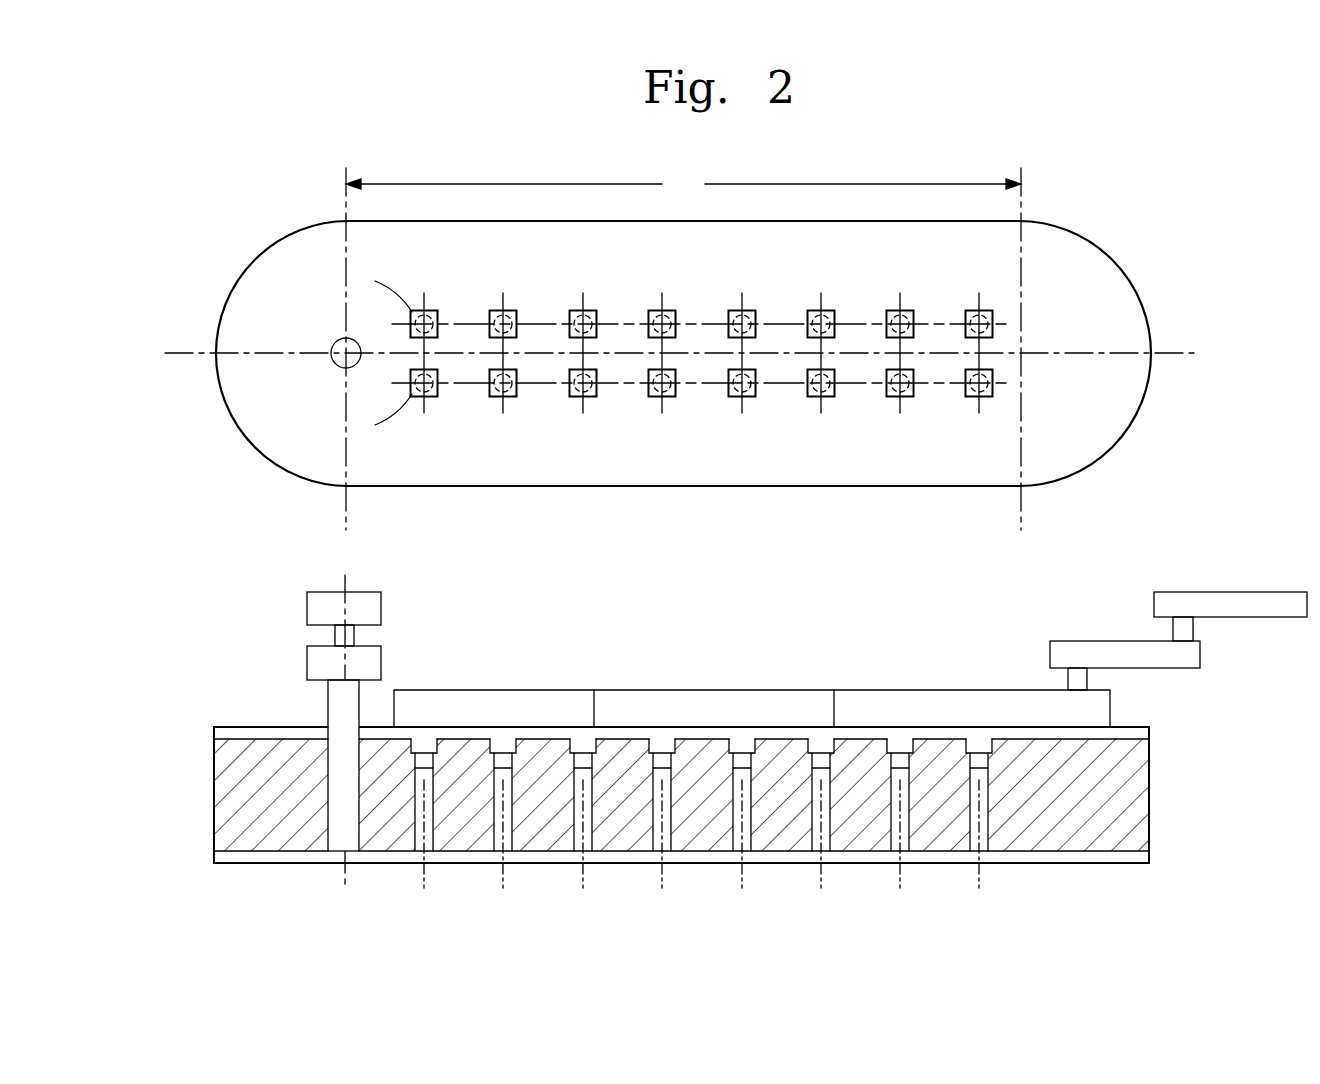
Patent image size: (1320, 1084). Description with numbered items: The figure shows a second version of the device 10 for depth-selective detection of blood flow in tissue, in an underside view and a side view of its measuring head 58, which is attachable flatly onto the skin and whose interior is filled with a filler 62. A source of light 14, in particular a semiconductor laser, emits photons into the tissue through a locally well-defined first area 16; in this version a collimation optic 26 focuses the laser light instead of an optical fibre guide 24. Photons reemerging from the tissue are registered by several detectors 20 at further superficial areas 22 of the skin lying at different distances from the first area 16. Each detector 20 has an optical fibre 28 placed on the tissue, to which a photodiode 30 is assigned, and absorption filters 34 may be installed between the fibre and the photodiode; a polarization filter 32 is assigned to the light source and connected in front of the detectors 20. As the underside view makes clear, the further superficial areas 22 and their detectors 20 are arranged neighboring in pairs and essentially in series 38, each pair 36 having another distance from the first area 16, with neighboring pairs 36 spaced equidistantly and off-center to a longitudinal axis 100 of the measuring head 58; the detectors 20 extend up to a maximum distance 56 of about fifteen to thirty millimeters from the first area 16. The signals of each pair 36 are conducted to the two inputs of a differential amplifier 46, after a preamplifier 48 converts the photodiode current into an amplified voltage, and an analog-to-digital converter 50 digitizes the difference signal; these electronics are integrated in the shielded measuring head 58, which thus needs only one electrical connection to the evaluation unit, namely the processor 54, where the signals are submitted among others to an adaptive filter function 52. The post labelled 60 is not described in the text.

The device 10 is at (1110, 251).
The longitudinal axis 100 is at (1180, 353).
The source of light 14 is at (336, 605).
The first area 16 is at (343, 352).
The detectors 20 is at (414, 830).
The further superficial areas 22 is at (417, 311).
The optical fibre guide 24 is at (336, 706).
The collimation optic 26 is at (336, 665).
The optical fibre 28 is at (430, 826).
The photodiode 30 is at (417, 396).
The polarization filter 32 is at (1065, 857).
The absorption filters 34 is at (490, 752).
The pair 36 is at (438, 369).
The series 38 is at (410, 324).
The differential amplifier 46 is at (538, 712).
The preamplifier 48 is at (694, 712).
The analog-to-digital converter 50 is at (855, 712).
The adaptive filter function 52 is at (1185, 652).
The processor 54 is at (1170, 600).
The maximum distance 56 is at (683, 349).
The measuring head 58 is at (1105, 455).
The actuator post 60 is at (1068, 682).
The filler 62 is at (1145, 758).